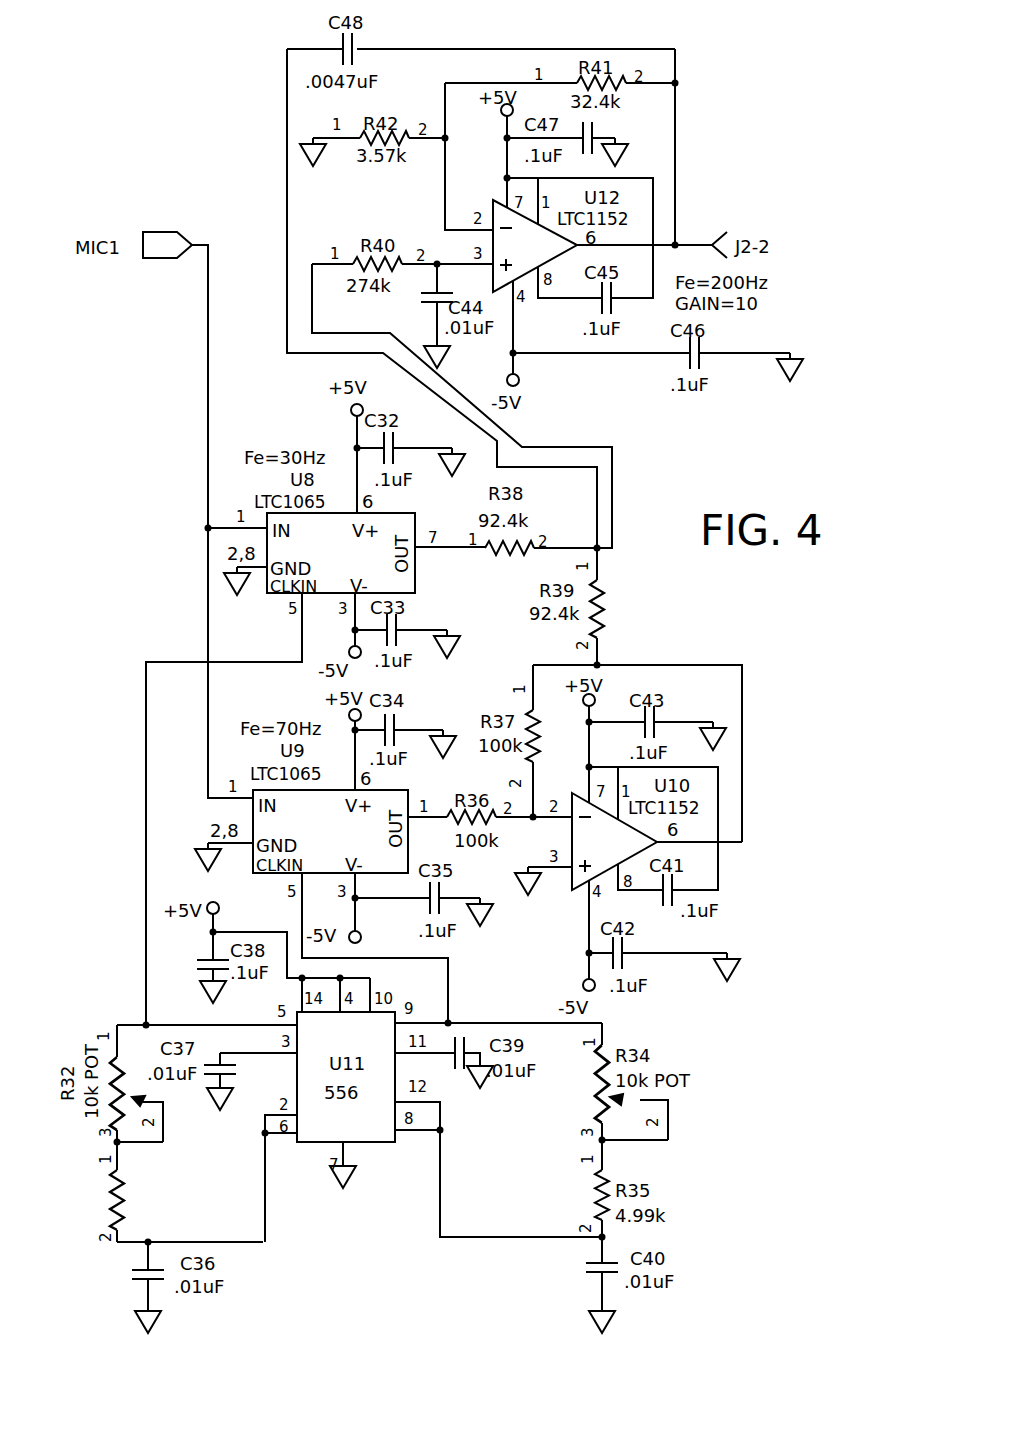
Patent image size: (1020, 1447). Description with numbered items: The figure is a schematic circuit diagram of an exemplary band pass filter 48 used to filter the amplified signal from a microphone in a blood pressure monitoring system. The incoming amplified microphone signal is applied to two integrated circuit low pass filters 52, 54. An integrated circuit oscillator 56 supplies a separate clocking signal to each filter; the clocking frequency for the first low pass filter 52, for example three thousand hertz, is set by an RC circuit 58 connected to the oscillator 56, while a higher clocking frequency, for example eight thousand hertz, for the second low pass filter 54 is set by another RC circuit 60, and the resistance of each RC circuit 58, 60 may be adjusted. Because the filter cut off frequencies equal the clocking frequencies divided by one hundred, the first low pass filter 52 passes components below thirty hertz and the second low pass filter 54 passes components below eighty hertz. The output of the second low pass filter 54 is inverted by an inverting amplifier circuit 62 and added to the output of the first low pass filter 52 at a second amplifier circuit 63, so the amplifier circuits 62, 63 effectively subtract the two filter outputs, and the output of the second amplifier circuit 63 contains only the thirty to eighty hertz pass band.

The band pass filter circuit 48 is at (195, 36).
The first low pass filter 52 is at (266, 514).
The second low pass filter 54 is at (251, 790).
The integrated circuit oscillator 56 is at (386, 1176).
The RC circuit 58 is at (118, 1174).
The RC circuit 60 is at (665, 1150).
The inverting amplifier circuit 62 is at (776, 870).
The second amplifier circuit 63 is at (725, 36).